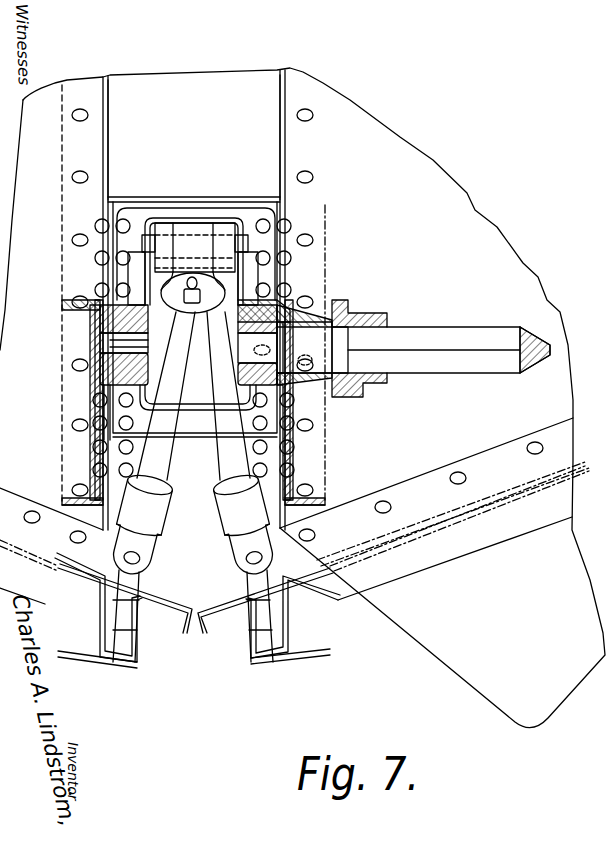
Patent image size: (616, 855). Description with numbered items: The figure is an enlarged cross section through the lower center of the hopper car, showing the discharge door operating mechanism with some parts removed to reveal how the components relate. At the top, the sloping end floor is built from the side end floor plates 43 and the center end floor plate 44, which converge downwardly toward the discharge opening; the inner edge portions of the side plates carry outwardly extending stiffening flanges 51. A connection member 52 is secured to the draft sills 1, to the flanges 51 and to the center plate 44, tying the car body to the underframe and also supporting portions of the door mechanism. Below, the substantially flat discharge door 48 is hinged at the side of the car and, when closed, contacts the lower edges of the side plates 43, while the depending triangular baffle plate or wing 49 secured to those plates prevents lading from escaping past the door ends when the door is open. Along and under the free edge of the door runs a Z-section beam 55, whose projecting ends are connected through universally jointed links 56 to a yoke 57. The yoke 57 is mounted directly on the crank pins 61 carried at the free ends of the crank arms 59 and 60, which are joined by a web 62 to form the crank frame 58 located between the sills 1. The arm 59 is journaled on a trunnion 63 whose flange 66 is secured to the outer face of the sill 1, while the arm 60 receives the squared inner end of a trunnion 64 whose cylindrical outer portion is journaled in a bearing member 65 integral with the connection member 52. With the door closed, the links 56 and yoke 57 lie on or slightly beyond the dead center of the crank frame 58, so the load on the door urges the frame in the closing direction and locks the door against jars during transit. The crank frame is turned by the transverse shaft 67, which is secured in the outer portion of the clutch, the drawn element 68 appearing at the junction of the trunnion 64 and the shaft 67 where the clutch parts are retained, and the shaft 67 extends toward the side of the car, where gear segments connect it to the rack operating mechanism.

The draft sill 1 is at (97, 452).
The side end floor plate 43 is at (302, 398).
The center end floor plate 44 is at (193, 300).
The discharge door 48 is at (203, 636).
The baffle plate or wing 49 is at (0, 583).
The stiffening flange 51 is at (282, 110).
The connection member 52 is at (120, 200).
The beam 55 is at (122, 667).
The universally jointed link 56 is at (240, 508).
The yoke 57 is at (187, 225).
The crank frame 58 is at (225, 225).
The crank arm 59 is at (88, 300).
The crank arm 60 is at (270, 300).
The crank pin 61 is at (243, 237).
The web 62 is at (230, 292).
The trunnion 63 is at (100, 330).
The trunnion 64 is at (308, 337).
The bearing member 65 is at (292, 380).
The flange 66 is at (92, 410).
The shaft 67 is at (450, 332).
The nut 68 is at (372, 315).